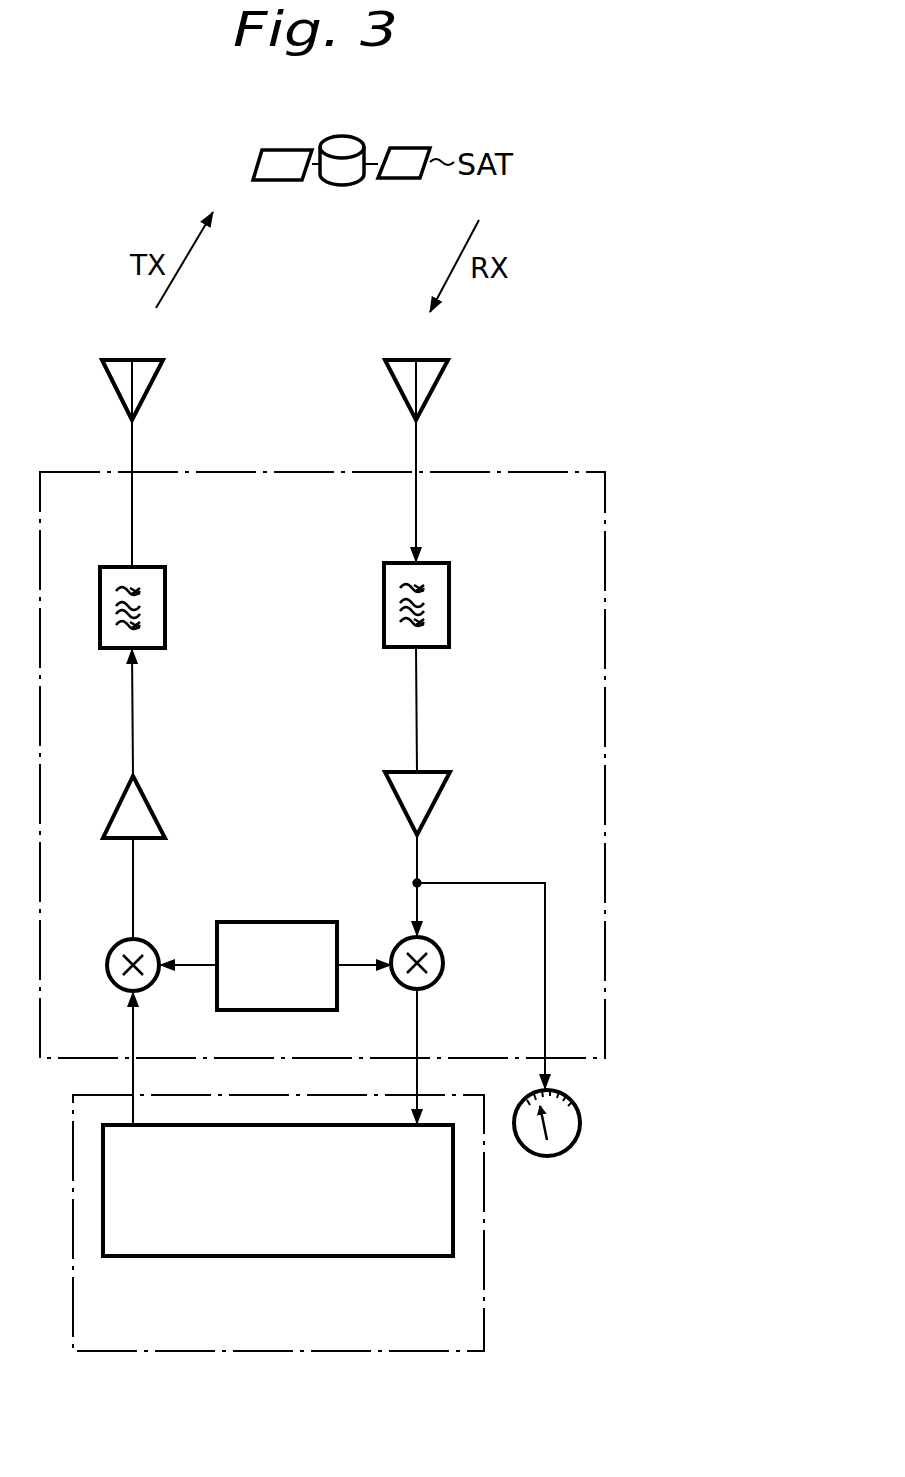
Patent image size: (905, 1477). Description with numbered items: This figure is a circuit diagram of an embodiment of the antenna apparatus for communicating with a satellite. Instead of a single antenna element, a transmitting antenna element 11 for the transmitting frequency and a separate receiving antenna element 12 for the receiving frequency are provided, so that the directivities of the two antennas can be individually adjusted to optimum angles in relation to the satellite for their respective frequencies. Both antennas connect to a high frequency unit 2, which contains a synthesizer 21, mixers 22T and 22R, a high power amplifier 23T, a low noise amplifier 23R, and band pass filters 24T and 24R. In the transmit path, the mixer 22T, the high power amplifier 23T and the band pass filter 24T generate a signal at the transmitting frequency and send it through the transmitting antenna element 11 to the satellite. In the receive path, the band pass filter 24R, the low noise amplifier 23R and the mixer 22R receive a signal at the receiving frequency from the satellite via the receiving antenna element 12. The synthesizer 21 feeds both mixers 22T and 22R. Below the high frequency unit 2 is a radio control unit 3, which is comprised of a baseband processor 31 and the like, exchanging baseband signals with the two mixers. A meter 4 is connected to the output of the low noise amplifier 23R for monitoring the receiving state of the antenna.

The high frequency unit 2 is at (548, 468).
The radio control unit 3 is at (484, 1252).
The meter 4 is at (580, 1127).
The transmitting antenna element 11 is at (150, 380).
The receiving antenna element 12 is at (435, 380).
The synthesizer 21 is at (268, 922).
The mixer 22T is at (150, 942).
The mixer 22R is at (445, 947).
The high power amplifier 23T is at (143, 786).
The low noise amplifier 23R is at (402, 810).
The band pass filter 24T is at (167, 580).
The band pass filter 24R is at (383, 609).
The baseband processor 31 is at (323, 1257).